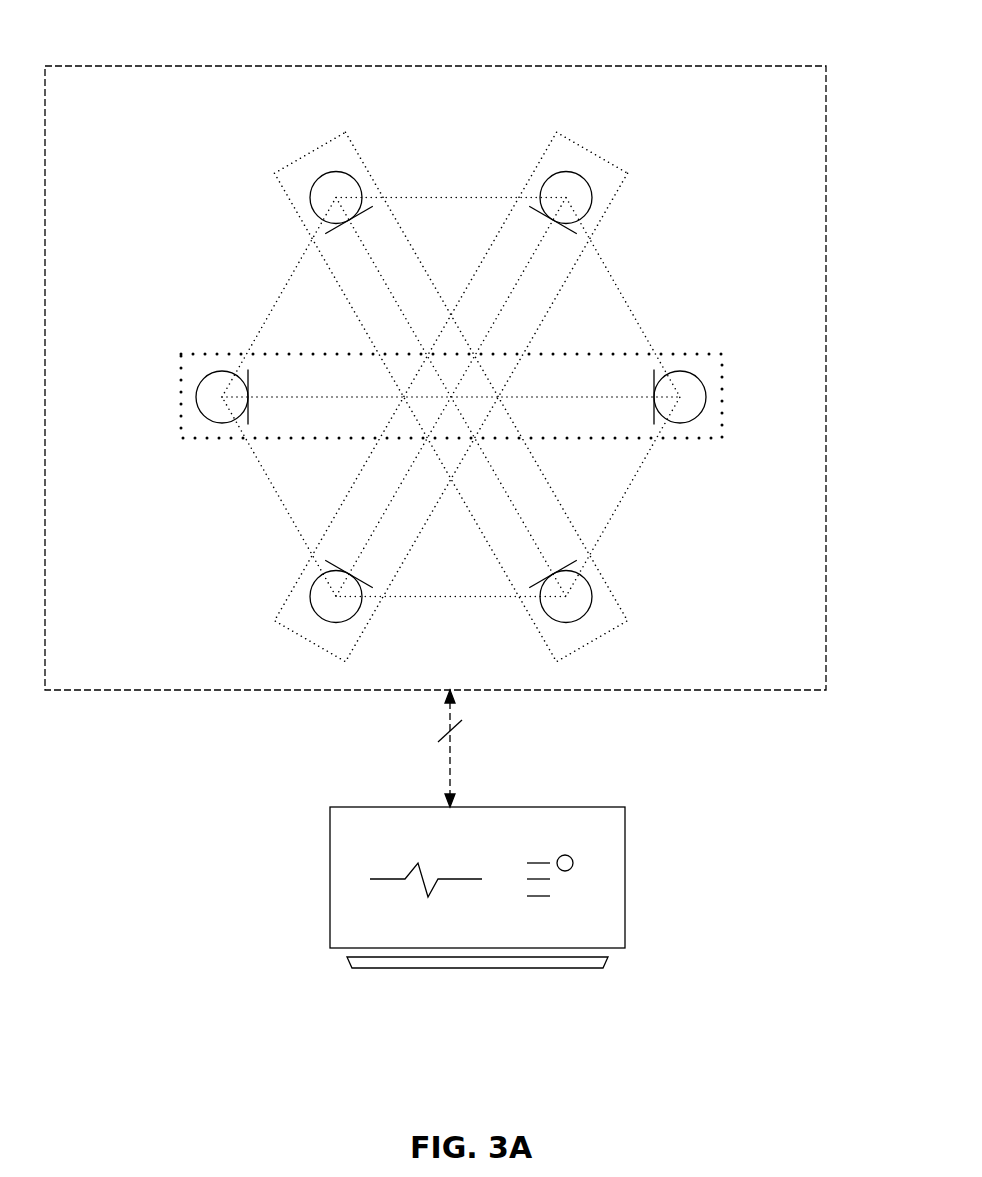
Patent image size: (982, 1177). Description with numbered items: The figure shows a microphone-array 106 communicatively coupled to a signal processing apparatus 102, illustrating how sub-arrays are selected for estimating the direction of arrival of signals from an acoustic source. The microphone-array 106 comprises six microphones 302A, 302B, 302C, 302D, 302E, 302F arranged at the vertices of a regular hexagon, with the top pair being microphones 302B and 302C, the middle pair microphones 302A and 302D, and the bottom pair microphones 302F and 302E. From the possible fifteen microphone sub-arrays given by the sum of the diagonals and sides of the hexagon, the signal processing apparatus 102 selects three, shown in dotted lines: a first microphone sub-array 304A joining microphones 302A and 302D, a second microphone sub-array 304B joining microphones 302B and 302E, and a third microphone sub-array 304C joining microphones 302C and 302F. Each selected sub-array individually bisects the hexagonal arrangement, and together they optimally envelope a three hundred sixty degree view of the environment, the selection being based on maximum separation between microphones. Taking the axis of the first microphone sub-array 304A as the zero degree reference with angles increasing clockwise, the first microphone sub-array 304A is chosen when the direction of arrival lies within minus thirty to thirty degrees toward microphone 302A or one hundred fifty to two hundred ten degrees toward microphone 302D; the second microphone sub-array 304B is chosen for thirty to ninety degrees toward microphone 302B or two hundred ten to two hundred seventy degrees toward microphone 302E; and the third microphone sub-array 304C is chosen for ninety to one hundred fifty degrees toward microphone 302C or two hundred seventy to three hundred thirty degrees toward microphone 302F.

The microphone-array 106 is at (497, 66).
The signal processing apparatus 102 is at (562, 807).
The microphone 302A is at (200, 412).
The microphone 302B is at (308, 208).
The microphone 302C is at (550, 180).
The microphone 302D is at (688, 370).
The microphone 302E is at (593, 598).
The microphone 302F is at (310, 592).
The first microphone sub-array 304A is at (190, 355).
The second microphone sub-array 304B is at (275, 168).
The third microphone sub-array 304C is at (593, 153).